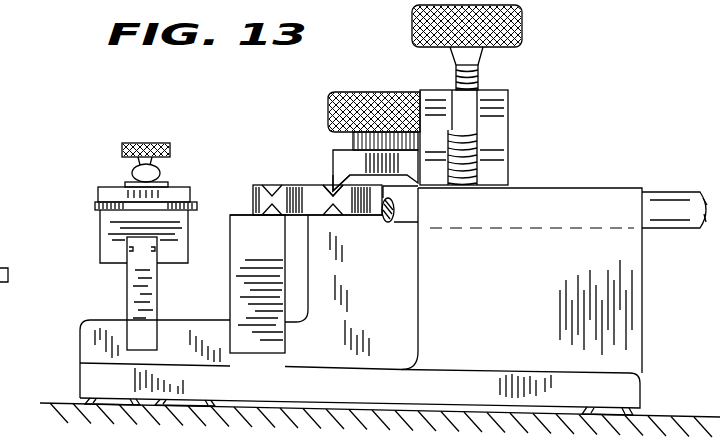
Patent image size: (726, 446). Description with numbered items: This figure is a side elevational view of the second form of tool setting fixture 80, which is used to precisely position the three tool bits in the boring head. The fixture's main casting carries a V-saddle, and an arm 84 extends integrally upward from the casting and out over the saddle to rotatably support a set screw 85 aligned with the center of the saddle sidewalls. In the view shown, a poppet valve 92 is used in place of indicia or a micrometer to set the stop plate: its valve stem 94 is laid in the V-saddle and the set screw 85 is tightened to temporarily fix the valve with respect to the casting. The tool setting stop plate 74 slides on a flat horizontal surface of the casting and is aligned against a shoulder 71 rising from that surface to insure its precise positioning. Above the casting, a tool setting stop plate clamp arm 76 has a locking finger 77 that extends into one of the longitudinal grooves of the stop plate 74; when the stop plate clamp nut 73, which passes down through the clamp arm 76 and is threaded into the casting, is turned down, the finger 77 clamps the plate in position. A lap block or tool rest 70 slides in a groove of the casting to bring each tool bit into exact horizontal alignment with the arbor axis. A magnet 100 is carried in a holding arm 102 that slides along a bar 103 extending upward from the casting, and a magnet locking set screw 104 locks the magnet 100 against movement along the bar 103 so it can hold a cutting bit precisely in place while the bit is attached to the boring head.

The lap block or tool rest 70 is at (232, 302).
The shoulder 71 is at (337, 212).
The stop plate clamp nut 73 is at (382, 100).
The tool setting stop plate 74 is at (300, 183).
The tool setting stop plate clamp arm 76 is at (348, 158).
The locking finger 77 is at (338, 181).
The tool setting fixture 80 is at (440, 420).
The arm 84 is at (508, 107).
The set screw 85 is at (480, 70).
The poppet valve 92 is at (688, 176).
The valve stem 94 is at (663, 200).
The magnet 100 is at (95, 203).
The holding arm 102 is at (99, 229).
The bar 103 is at (127, 291).
The magnet locking set screw 104 is at (131, 143).